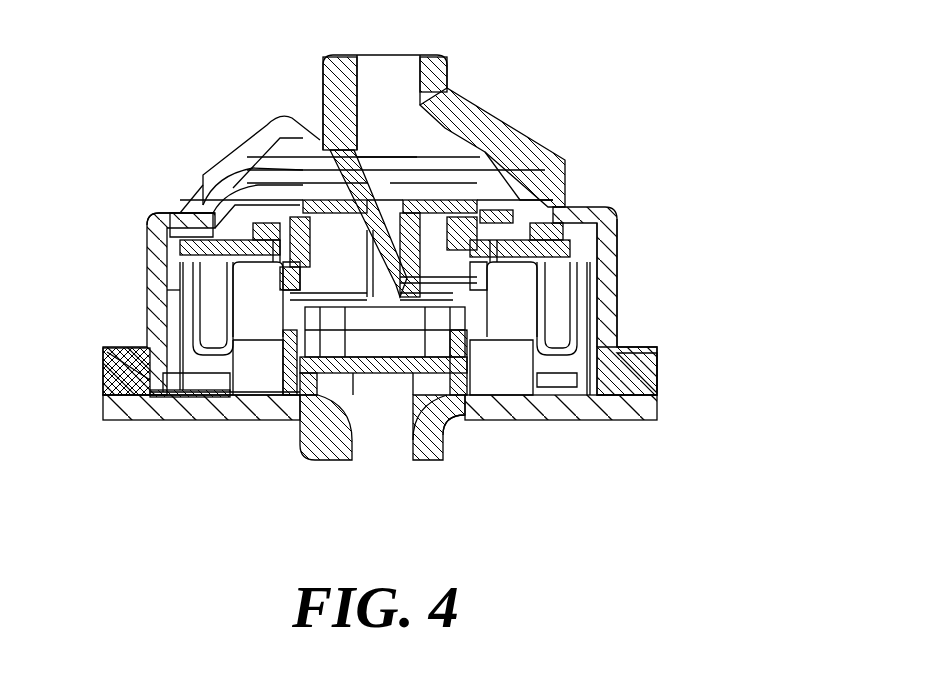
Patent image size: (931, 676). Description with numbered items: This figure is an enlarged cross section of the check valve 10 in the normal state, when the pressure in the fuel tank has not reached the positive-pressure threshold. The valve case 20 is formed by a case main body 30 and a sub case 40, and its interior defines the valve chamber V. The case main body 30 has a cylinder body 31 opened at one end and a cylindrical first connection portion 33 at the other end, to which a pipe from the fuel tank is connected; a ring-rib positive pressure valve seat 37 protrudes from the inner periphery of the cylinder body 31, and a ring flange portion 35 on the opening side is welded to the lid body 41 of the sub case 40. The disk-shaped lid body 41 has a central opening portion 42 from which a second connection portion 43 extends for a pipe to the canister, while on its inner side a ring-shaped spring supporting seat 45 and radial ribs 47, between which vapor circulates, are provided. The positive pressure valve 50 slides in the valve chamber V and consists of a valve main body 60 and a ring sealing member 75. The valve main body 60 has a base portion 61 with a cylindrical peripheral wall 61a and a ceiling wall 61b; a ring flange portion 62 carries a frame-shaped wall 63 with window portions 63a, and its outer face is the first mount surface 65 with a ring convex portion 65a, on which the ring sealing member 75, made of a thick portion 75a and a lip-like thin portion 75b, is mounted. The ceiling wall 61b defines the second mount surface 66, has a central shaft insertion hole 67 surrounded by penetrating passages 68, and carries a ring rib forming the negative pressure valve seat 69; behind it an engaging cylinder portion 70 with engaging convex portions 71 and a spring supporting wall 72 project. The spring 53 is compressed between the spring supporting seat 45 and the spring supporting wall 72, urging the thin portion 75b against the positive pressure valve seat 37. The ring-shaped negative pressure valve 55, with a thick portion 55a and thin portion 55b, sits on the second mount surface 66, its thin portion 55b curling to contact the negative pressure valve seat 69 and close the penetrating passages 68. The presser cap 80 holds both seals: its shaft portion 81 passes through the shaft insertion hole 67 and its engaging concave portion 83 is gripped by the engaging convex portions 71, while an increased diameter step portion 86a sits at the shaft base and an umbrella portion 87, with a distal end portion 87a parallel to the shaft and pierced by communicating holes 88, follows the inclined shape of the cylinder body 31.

The check valve 10 is at (527, 110).
The valve case 20 is at (757, 330).
The case main body 30 is at (630, 323).
The cylinder body 31 is at (617, 275).
The first connection portion 33 is at (445, 65).
The ring flange portion 35 is at (103, 357).
The positive pressure valve seat 37 is at (180, 215).
The sub case 40 is at (665, 417).
The lid body 41 is at (523, 407).
The opening portion 42 is at (383, 417).
The second connection portion 43 is at (430, 467).
The spring supporting seat 45 is at (323, 373).
The ribs 47 is at (505, 393).
The positive pressure valve 50 is at (590, 383).
The spring 53 is at (447, 437).
The negative pressure valve 55 is at (487, 110).
The thick portion 55a is at (407, 157).
The thin portion 55b is at (520, 160).
The valve main body 60 is at (600, 305).
The base portion 61 is at (683, 205).
The peripheral wall 61a is at (593, 250).
The ceiling wall 61b is at (583, 208).
The flange portion 62 is at (250, 280).
The frame-shaped wall 63 is at (187, 392).
The window portions 63a is at (160, 317).
The first mount surface 65 is at (170, 245).
The ring convex portion 65a is at (173, 268).
The second mount surface 66 is at (540, 197).
The shaft insertion hole 67 is at (350, 105).
The penetrating passages 68 is at (275, 190).
The negative pressure valve seat 69 is at (560, 177).
The engaging cylinder portion 70 is at (300, 290).
The engaging convex portions 71 is at (313, 373).
The spring supporting wall 72 is at (213, 400).
The ring sealing member 75 is at (200, 225).
The thick portion 75a is at (207, 200).
The thin portion 75b is at (147, 223).
The presser cap 80 is at (320, 100).
The shaft portion 81 is at (378, 157).
The engaging concave portion 83 is at (367, 360).
The increased diameter step portion 86a is at (295, 118).
The umbrella portion 87 is at (262, 195).
The distal end portion 87a is at (213, 173).
The communicating holes 88 is at (525, 172).
The valve chamber V is at (153, 290).